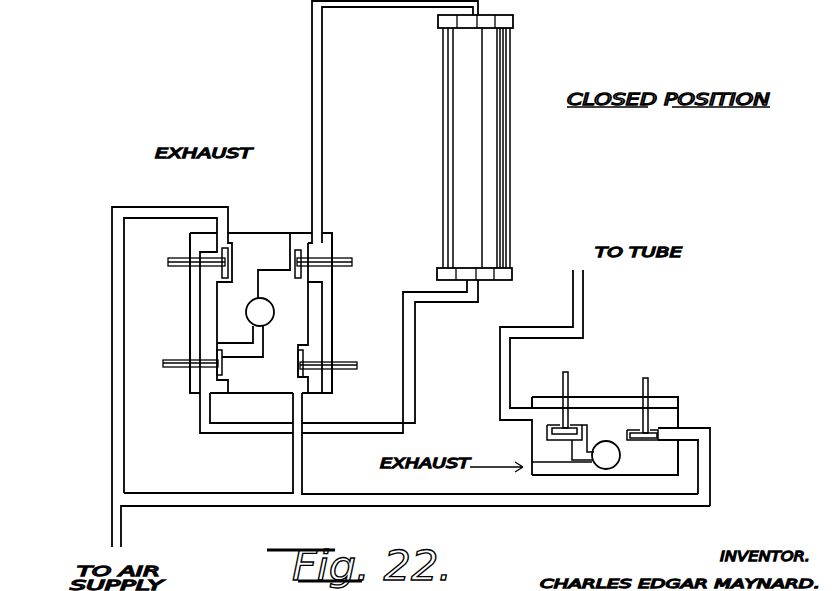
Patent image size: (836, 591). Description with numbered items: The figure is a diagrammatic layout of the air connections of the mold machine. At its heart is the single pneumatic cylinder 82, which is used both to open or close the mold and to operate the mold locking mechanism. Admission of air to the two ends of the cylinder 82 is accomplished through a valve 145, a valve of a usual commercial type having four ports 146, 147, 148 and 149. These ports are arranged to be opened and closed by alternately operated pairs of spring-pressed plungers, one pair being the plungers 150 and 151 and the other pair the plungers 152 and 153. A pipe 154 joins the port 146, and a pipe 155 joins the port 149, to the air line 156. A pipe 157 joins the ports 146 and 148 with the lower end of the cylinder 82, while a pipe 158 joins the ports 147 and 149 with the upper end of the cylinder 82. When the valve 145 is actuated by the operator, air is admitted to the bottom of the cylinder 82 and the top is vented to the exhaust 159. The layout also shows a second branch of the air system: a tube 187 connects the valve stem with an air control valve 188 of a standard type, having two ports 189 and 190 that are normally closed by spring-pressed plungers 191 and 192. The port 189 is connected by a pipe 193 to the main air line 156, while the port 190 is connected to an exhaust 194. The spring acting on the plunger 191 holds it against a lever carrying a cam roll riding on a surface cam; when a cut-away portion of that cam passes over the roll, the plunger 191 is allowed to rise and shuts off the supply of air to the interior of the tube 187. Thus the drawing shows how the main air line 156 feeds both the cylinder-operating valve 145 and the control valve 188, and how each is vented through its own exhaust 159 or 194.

The pneumatic cylinder 82 is at (492, 183).
The valve 145 is at (193, 315).
The port 146 is at (217, 270).
The port 147 is at (307, 268).
The port 148 is at (210, 370).
The port 149 is at (297, 378).
The spring-pressed plunger 150 is at (178, 258).
The spring-pressed plunger 151 is at (340, 263).
The spring-pressed plunger 152 is at (172, 357).
The spring-pressed plunger 153 is at (340, 362).
The pipe 154 is at (112, 467).
The pipe 155 is at (297, 467).
The air line 156 is at (122, 497).
The pipe 157 is at (408, 372).
The pipe 158 is at (367, 5).
The exhaust 159 is at (223, 165).
The tube 187 is at (580, 305).
The air control valve 188 is at (597, 400).
The port 189 is at (642, 440).
The port 190 is at (560, 435).
The spring-pressed plunger 191 is at (650, 403).
The spring-pressed plunger 192 is at (565, 388).
The pipe 193 is at (523, 500).
The exhaust 194 is at (606, 462).